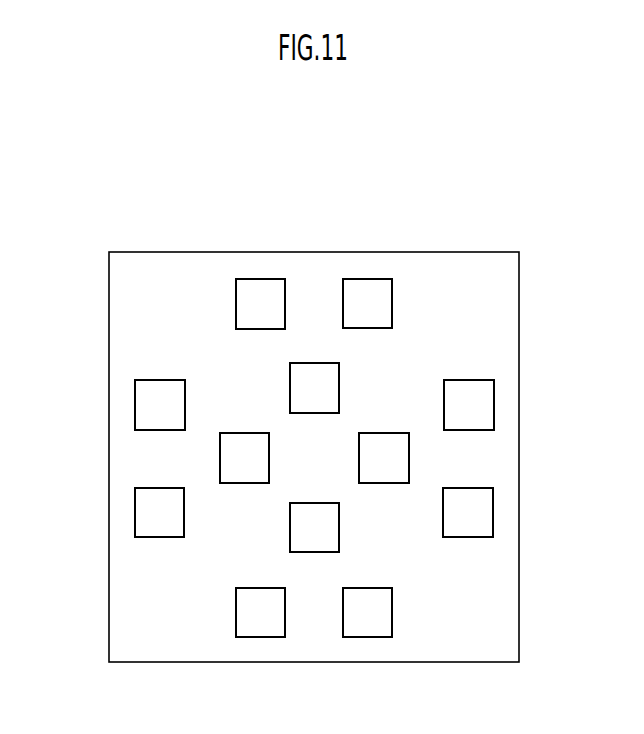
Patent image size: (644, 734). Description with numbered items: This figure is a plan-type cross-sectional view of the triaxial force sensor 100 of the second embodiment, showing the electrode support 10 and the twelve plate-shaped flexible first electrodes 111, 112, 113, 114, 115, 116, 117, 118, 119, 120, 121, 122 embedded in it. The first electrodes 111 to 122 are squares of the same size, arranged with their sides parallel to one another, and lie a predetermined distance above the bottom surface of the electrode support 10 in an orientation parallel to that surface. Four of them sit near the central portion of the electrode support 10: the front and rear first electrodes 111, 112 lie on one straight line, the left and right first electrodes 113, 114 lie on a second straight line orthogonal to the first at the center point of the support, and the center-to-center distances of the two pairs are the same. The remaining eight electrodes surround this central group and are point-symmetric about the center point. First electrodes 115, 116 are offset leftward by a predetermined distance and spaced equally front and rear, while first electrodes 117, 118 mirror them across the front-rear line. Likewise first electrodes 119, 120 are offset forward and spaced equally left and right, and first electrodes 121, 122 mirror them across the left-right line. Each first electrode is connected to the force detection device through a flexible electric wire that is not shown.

The triaxial force sensor 100 is at (457, 172).
The electrode support 10 is at (485, 252).
The first electrode 111 is at (311, 552).
The first electrode 112 is at (310, 363).
The first electrode 113 is at (220, 445).
The first electrode 114 is at (409, 441).
The first electrode 115 is at (135, 513).
The first electrode 116 is at (135, 400).
The first electrode 117 is at (493, 513).
The first electrode 118 is at (494, 400).
The first electrode 119 is at (250, 637).
The first electrode 120 is at (380, 637).
The first electrode 121 is at (247, 279).
The first electrode 122 is at (377, 279).